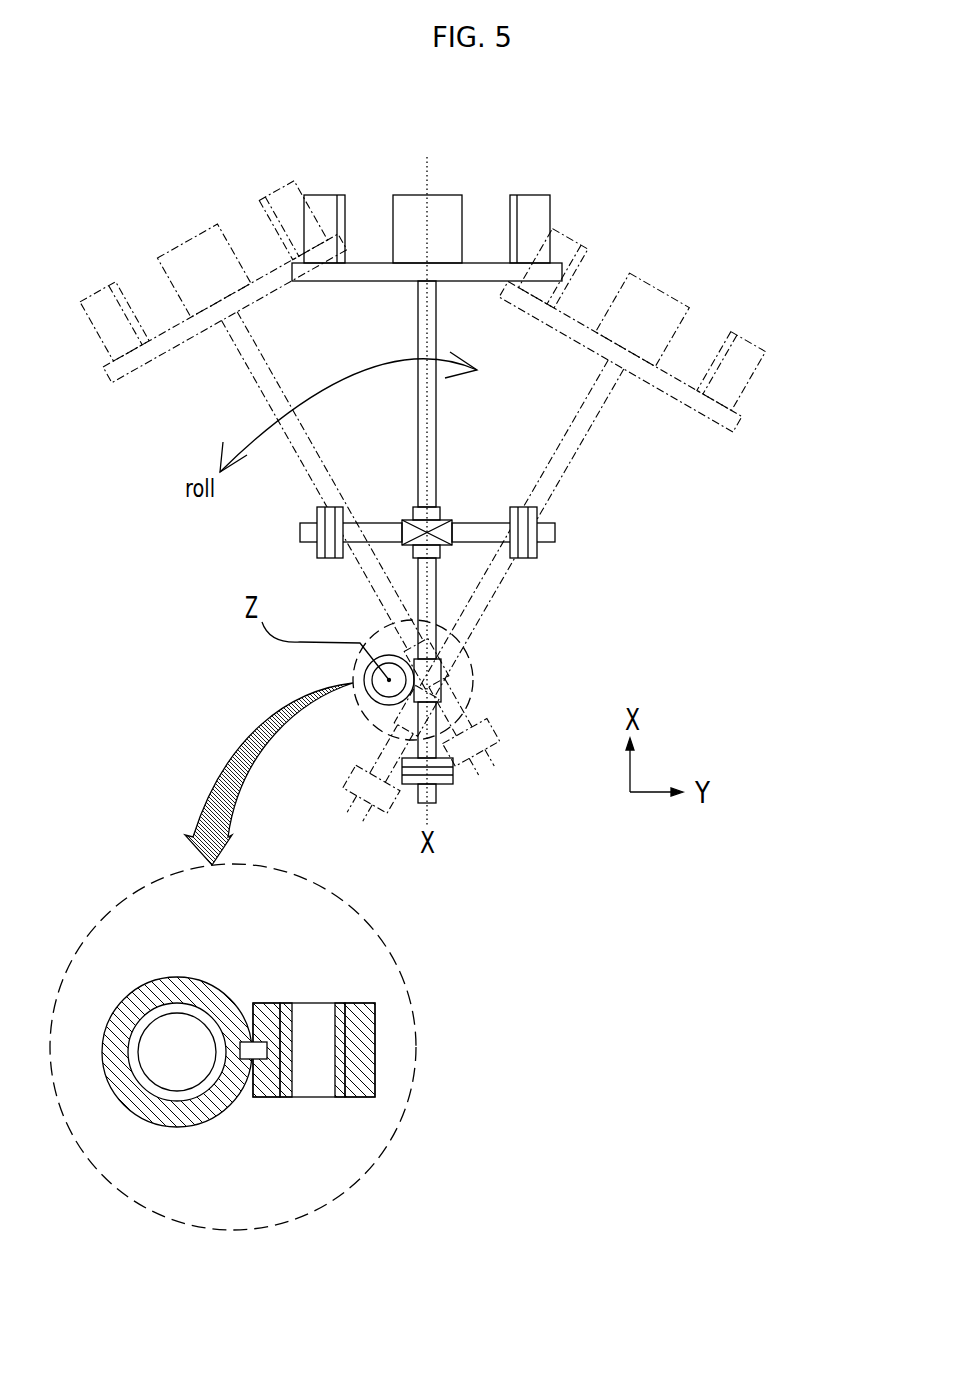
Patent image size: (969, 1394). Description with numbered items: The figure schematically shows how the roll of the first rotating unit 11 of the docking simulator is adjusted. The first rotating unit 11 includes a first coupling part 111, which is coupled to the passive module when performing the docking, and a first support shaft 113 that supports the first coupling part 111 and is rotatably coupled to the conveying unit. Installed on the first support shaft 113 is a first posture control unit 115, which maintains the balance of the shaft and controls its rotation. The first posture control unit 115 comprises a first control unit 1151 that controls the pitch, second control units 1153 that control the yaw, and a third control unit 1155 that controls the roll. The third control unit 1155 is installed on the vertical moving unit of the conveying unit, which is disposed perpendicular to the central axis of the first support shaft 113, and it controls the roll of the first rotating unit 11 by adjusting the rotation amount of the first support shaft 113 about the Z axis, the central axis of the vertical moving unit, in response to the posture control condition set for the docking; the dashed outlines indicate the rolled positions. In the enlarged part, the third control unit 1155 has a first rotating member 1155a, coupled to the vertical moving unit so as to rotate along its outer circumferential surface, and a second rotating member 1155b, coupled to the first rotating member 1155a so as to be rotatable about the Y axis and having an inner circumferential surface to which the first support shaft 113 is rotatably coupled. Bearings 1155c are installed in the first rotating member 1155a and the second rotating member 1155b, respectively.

The first rotating unit 11 is at (464, 192).
The first coupling part 111 is at (368, 272).
The first support shaft 113 is at (425, 328).
The first posture control unit 115 is at (470, 709).
The first control unit 1151 is at (453, 781).
The second control units 1153 is at (451, 558).
The third control unit 1155 is at (455, 685).
The first rotating member 1155a is at (210, 990).
The second rotating member 1155b is at (270, 1005).
The bearings 1155c is at (290, 1090).